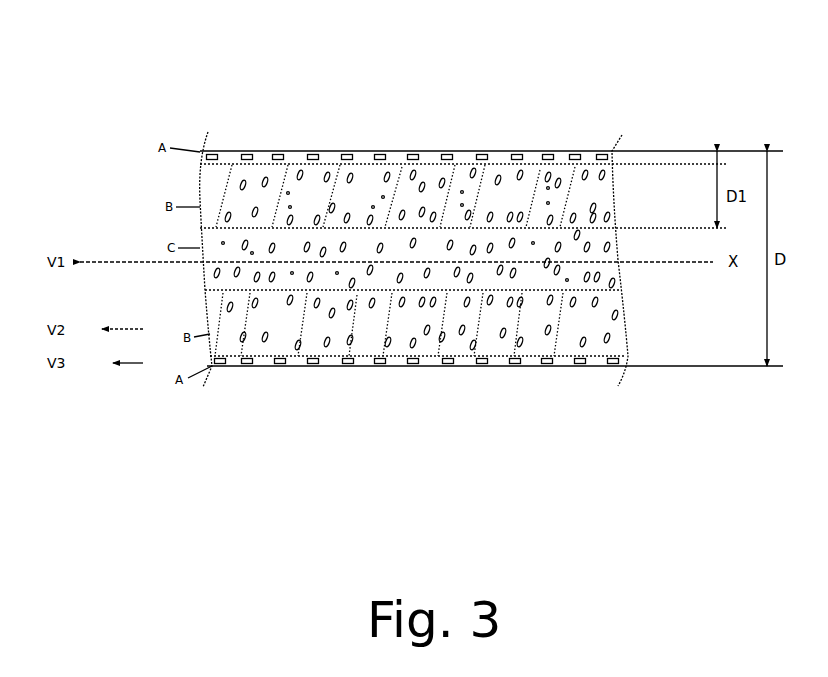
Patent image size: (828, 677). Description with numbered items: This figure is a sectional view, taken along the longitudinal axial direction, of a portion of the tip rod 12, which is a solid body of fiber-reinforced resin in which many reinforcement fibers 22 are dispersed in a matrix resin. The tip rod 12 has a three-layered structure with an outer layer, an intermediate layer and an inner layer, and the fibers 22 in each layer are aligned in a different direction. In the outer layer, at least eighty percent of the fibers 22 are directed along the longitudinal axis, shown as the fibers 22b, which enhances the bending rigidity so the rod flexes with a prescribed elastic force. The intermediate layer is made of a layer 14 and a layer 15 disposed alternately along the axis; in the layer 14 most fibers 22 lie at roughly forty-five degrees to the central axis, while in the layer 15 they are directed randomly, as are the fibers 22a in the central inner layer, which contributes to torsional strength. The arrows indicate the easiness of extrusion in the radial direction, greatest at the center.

The tip rod 12 is at (637, 70).
The layer 14 is at (258, 167).
The layer 15 is at (293, 170).
The reinforcement fibers 22 is at (607, 168).
The first fused part 22a is at (350, 175).
The fibers 22b is at (348, 150).